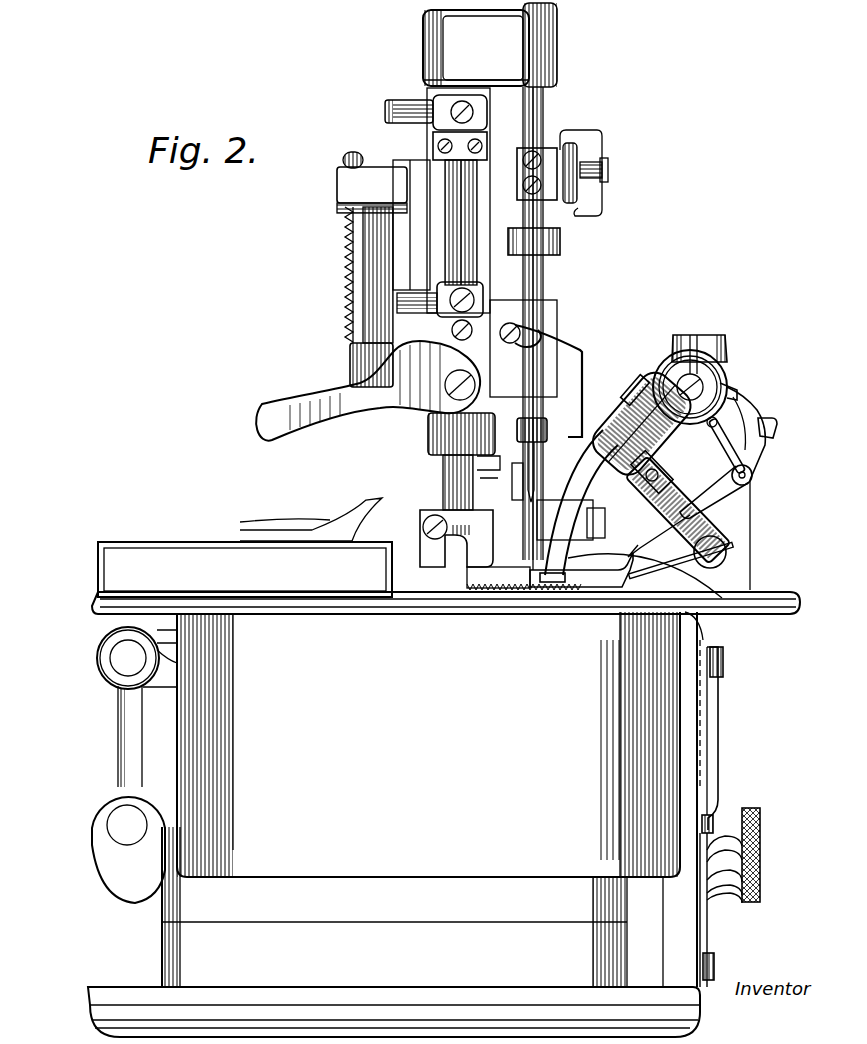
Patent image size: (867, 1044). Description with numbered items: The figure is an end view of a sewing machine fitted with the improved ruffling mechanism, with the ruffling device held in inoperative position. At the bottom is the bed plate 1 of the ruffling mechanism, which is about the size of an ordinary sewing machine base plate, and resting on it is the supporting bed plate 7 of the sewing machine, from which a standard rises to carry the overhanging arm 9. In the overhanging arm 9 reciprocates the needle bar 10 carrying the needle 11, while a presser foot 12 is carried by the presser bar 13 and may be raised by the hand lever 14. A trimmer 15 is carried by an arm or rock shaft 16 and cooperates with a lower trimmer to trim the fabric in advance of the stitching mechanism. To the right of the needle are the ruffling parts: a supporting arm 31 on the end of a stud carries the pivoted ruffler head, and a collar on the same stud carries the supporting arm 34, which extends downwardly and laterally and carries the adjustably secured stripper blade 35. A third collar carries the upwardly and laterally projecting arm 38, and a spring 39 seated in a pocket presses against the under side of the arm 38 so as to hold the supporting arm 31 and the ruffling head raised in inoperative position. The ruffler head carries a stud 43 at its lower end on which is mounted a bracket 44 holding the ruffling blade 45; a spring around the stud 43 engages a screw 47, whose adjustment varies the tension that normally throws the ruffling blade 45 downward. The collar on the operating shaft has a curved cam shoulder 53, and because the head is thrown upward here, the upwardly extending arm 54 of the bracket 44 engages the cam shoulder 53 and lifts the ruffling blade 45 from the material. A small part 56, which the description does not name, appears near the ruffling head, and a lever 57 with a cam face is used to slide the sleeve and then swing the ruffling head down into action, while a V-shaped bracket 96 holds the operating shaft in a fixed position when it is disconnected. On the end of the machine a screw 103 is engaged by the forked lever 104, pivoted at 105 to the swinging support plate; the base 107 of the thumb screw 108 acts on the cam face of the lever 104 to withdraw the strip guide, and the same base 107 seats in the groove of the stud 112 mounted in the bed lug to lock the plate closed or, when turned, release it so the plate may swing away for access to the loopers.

The bed plate 1 is at (394, 1012).
The supporting bed plate 7 is at (397, 799).
The overhanging arm 9 is at (476, 48).
The needle bar 10 is at (545, 293).
The needle 11 is at (533, 520).
The presser foot 12 is at (592, 588).
The presser bar 13 is at (445, 478).
The hand lever 14 is at (373, 392).
The trimmer 15 is at (582, 460).
The arm or rock shaft 16 is at (385, 515).
The supporting arm 31 is at (641, 423).
The supporting arm 34 is at (678, 520).
The stripper blade 35 is at (692, 562).
The arm 38 is at (628, 400).
The spring 39 is at (651, 385).
The stud 43 is at (752, 478).
The bracket 44 is at (722, 500).
The ruffling blade 45 is at (650, 528).
The screw 47 is at (755, 448).
The cam shoulder 53 is at (752, 420).
The arm 54 is at (776, 428).
The screw 56 is at (665, 464).
The lever 57 is at (648, 488).
The V-shaped bracket 96 is at (738, 397).
The screw 103 is at (724, 658).
The lever 104 is at (720, 742).
The pivot 105 is at (716, 972).
The base 107 is at (715, 895).
The thumb screw 108 is at (762, 845).
The stud 112 is at (714, 815).